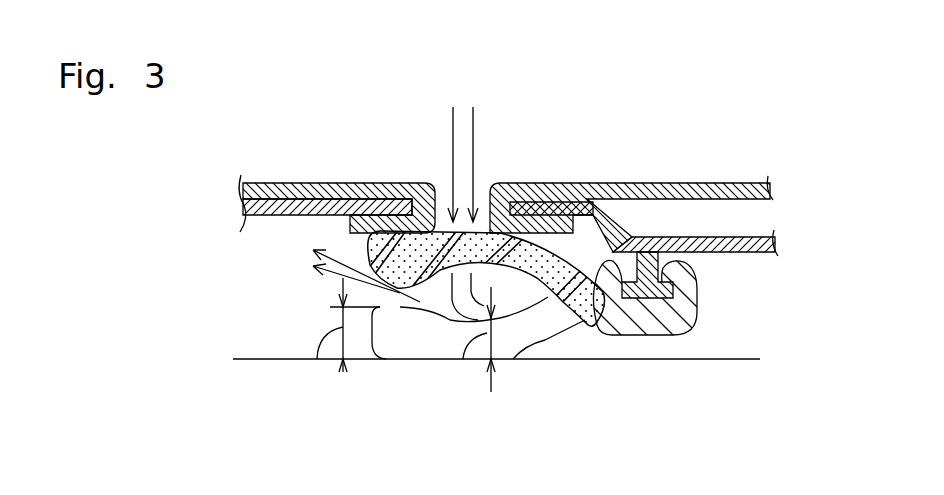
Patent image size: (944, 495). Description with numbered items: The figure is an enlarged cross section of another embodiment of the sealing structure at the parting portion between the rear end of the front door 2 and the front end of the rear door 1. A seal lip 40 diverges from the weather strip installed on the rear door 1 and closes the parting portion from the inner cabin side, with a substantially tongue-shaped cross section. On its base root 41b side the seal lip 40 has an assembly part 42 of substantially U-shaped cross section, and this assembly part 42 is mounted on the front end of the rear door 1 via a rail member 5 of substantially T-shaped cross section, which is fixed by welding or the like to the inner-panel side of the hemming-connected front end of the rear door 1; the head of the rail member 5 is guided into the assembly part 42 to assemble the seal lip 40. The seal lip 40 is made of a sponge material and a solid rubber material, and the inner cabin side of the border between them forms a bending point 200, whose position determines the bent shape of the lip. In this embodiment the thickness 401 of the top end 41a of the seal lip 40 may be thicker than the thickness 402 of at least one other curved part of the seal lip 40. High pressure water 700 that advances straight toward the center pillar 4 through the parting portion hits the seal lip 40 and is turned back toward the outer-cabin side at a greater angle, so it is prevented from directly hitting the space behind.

The rear door 1 is at (657, 183).
The front door 2 is at (318, 183).
The center pillar 4 is at (263, 360).
The rail member 5 is at (703, 292).
The seal lip 40 is at (571, 339).
The top end 41a is at (386, 183).
The base root 41b is at (647, 323).
The assembly part 42 is at (588, 183).
The bending point 200 is at (580, 323).
The thickness of the top end 401 is at (318, 360).
The thickness of curved part 402 is at (467, 360).
The high pressure water 700 is at (372, 188).